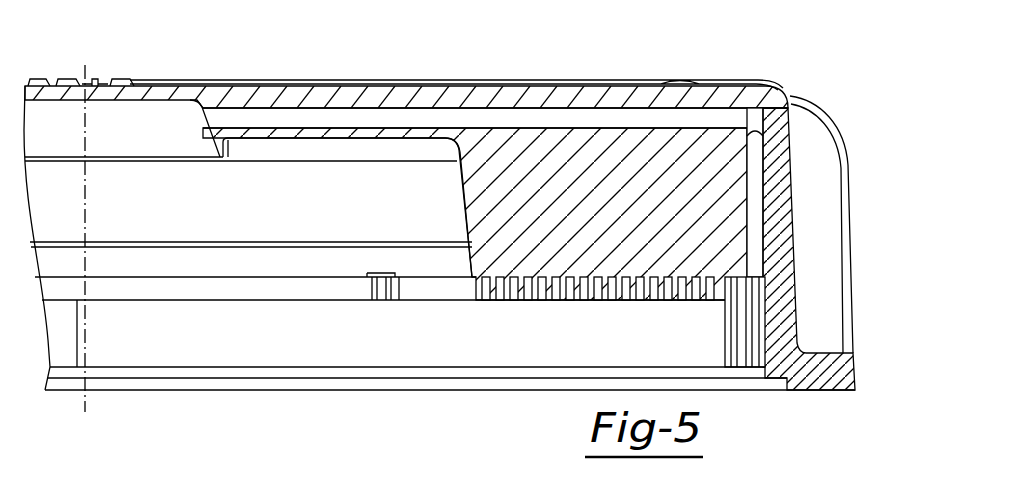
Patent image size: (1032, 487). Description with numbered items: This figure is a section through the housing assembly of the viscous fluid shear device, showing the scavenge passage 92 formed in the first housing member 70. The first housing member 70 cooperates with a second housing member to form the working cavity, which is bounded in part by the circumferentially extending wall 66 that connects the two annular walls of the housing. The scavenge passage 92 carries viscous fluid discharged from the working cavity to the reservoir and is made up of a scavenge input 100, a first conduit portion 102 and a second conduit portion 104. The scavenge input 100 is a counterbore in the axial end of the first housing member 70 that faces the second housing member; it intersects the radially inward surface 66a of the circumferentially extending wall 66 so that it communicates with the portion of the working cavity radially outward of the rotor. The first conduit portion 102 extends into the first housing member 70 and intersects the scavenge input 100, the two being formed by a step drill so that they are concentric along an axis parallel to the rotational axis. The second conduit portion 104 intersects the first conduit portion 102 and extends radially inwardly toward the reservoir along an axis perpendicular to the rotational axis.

The first housing member 70 is at (227, 100).
The second conduit portion 104 is at (483, 118).
The scavenge passage 92 is at (736, 112).
The first conduit portion 102 is at (752, 170).
The scavenge input 100 is at (758, 303).
The circumferentially extending wall 66 is at (800, 370).
The radially inward surface 66a is at (508, 350).